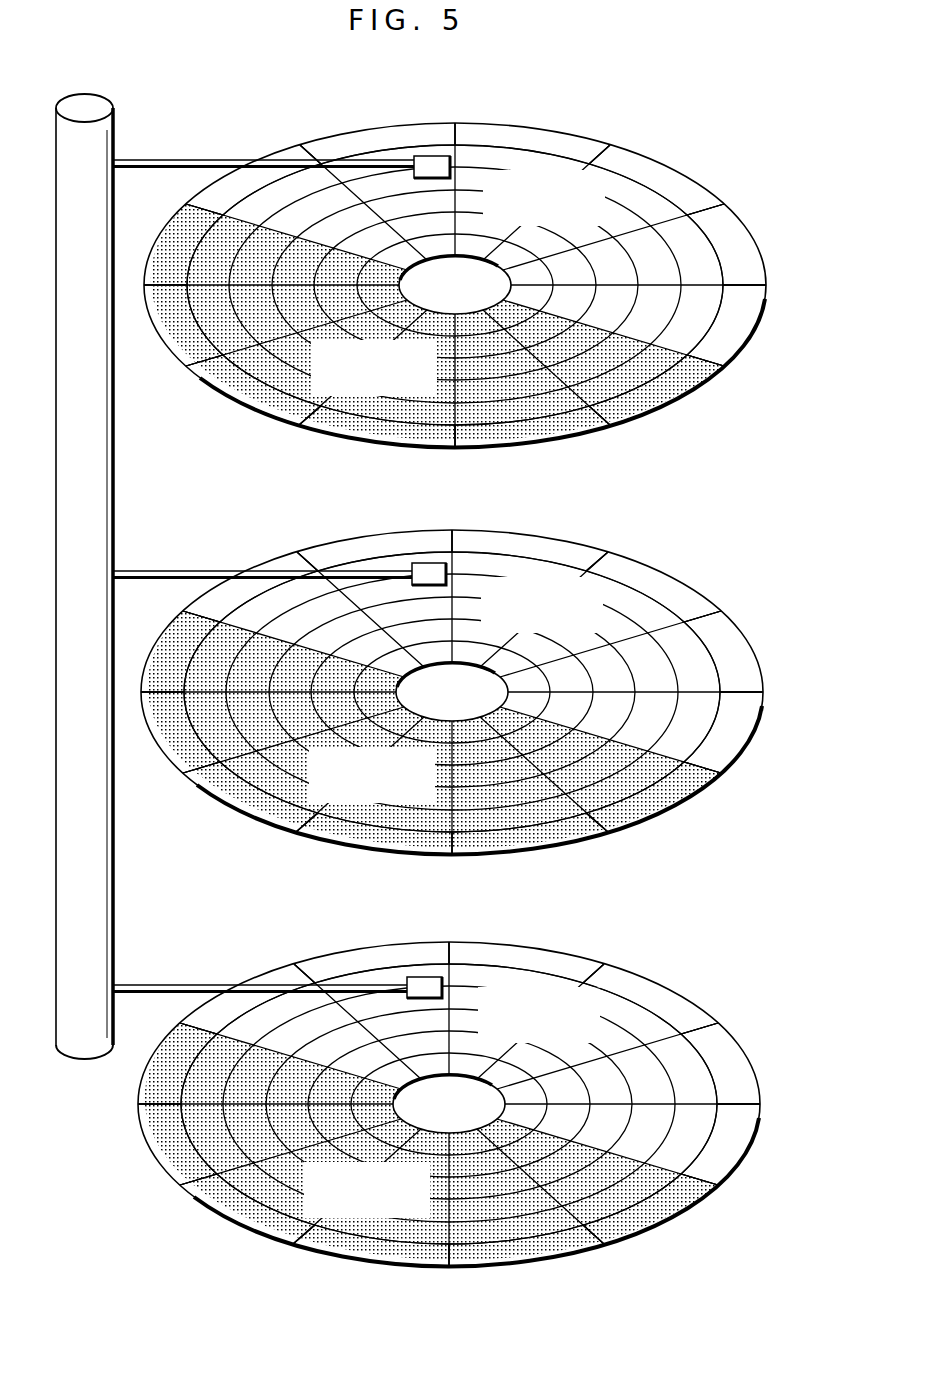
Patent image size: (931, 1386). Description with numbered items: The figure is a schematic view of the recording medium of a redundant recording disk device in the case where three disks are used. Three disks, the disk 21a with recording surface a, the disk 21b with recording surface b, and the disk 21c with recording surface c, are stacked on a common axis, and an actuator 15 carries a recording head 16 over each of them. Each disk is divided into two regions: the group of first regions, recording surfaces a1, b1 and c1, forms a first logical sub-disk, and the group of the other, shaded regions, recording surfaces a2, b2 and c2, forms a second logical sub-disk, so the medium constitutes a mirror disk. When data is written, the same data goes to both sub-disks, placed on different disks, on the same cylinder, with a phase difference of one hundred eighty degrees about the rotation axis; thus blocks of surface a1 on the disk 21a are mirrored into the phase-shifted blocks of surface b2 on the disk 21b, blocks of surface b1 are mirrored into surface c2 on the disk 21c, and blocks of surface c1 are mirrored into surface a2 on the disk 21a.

The actuator 15 is at (95, 108).
The recording head 16 is at (437, 162).
The disk 21a is at (297, 148).
The disk 21b is at (294, 555).
The disk 21c is at (289, 967).